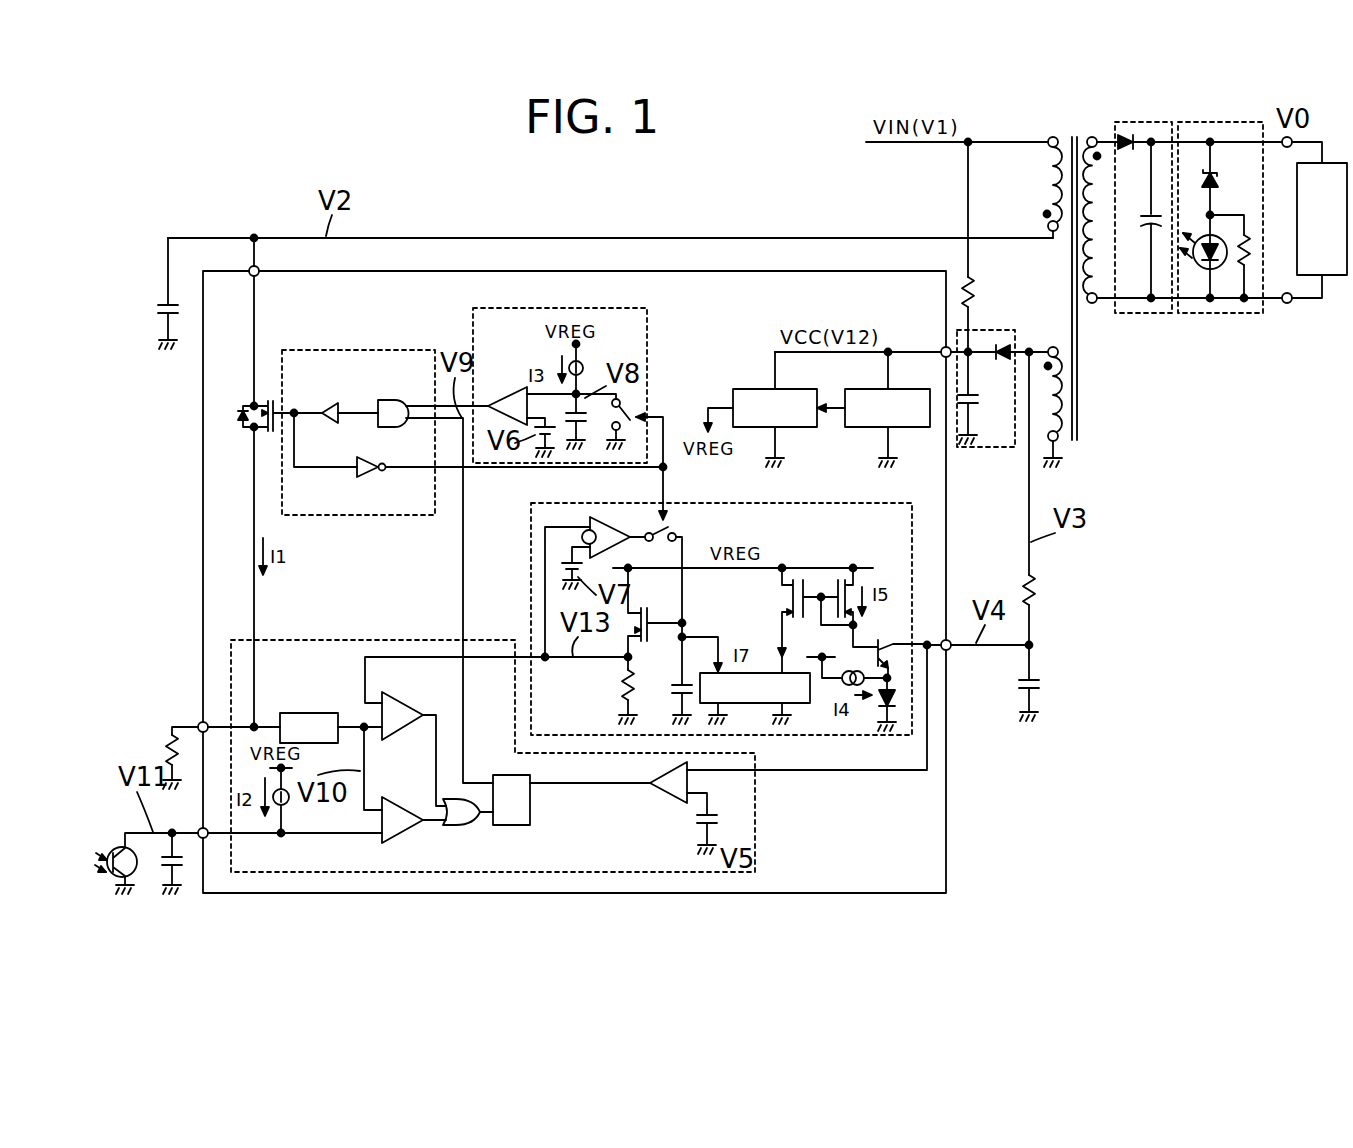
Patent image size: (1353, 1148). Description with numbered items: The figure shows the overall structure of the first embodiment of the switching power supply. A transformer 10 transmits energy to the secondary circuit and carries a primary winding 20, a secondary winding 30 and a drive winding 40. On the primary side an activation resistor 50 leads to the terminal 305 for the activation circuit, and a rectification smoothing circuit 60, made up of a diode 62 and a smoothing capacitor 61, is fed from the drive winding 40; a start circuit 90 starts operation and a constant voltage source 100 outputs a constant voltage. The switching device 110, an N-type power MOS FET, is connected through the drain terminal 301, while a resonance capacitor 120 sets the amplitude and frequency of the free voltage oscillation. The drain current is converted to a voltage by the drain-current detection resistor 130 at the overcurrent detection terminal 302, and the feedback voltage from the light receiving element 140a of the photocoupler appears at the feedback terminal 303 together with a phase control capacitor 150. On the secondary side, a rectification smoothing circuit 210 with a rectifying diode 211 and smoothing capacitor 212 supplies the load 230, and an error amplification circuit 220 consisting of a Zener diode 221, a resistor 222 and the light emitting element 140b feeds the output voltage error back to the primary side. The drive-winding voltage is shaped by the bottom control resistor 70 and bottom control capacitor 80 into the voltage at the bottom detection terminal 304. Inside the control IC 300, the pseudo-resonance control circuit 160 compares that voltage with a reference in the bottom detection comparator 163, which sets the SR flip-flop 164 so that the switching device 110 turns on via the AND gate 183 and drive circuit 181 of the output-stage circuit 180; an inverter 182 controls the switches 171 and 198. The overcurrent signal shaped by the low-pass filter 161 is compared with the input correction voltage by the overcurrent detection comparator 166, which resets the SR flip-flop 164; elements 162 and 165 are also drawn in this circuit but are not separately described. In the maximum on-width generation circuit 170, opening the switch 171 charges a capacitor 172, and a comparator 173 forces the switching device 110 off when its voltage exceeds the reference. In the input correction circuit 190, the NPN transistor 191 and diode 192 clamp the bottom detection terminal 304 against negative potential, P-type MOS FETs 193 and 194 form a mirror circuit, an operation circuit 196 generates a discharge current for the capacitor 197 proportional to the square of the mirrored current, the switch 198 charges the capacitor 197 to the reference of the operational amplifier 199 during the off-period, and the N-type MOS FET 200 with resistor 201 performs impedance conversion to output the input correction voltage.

The transformer 10 is at (1074, 137).
The primary winding 20 is at (1049, 140).
The secondary winding 30 is at (1092, 138).
The drive winding 40 is at (1056, 442).
The activation resistor 50 is at (975, 288).
The rectification smoothing circuit 60 is at (976, 450).
The smoothing capacitor 61 is at (1003, 360).
The diode 62 is at (973, 412).
The bottom control resistor 70 is at (1033, 592).
The bottom control capacitor 80 is at (1033, 682).
The start circuit 90 is at (905, 430).
The constant voltage source 100 is at (800, 389).
The switching device 110 is at (250, 405).
The resonance capacitor 120 is at (165, 302).
The drain-current detection resistor 130 is at (168, 745).
The light receiving element 140a is at (105, 860).
The light emitting element 140b is at (1206, 275).
The phase control capacitor 150 is at (180, 872).
The pseudo-resonance control circuit 160 is at (760, 830).
The low-pass filter 161 is at (300, 713).
The comparator 162 is at (405, 845).
The bottom detection comparator 163 is at (660, 790).
The SR flip-flop 164 is at (498, 775).
The OR gate 165 is at (460, 830).
The overcurrent detection comparator 166 is at (390, 690).
The maximum on-width generation circuit 170 is at (592, 305).
The switch 171 is at (628, 412).
The capacitor 172 is at (573, 428).
The comparator 173 is at (500, 395).
The output-stage circuit 180 is at (308, 350).
The drive circuit 181 is at (328, 403).
The inverter 182 is at (370, 478).
The AND gate 183 is at (396, 400).
The input correction circuit 190 is at (697, 502).
The NPN transistor 191 is at (878, 645).
The diode 192 is at (882, 708).
The P-type MOS FET 193 is at (847, 587).
The P-type MOS FET 194 is at (783, 600).
The operation circuit 196 is at (758, 705).
The capacitor 197 is at (679, 690).
The switch 198 is at (678, 535).
The operational amplifier 199 is at (598, 520).
The N-type MOS FET 200 is at (655, 602).
The resistor 201 is at (622, 690).
The rectification smoothing circuit 210 is at (1140, 318).
The rectifying diode 211 is at (1128, 140).
The smoothing capacitor 212 is at (1148, 225).
The error amplification circuit 220 is at (1240, 318).
The Zener diode 221 is at (1218, 178).
The resistor 222 is at (1250, 255).
The load 230 is at (1326, 278).
The control IC 300 is at (947, 858).
The drain terminal 301 is at (252, 266).
The overcurrent detection terminal 302 is at (200, 722).
The feedback terminal 303 is at (200, 828).
The bottom detection terminal 304 is at (950, 650).
The terminal for activation circuit 305 is at (943, 348).